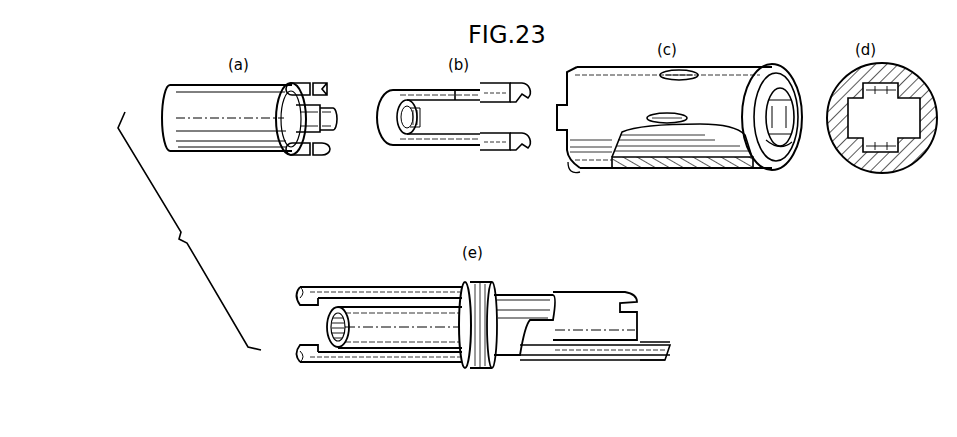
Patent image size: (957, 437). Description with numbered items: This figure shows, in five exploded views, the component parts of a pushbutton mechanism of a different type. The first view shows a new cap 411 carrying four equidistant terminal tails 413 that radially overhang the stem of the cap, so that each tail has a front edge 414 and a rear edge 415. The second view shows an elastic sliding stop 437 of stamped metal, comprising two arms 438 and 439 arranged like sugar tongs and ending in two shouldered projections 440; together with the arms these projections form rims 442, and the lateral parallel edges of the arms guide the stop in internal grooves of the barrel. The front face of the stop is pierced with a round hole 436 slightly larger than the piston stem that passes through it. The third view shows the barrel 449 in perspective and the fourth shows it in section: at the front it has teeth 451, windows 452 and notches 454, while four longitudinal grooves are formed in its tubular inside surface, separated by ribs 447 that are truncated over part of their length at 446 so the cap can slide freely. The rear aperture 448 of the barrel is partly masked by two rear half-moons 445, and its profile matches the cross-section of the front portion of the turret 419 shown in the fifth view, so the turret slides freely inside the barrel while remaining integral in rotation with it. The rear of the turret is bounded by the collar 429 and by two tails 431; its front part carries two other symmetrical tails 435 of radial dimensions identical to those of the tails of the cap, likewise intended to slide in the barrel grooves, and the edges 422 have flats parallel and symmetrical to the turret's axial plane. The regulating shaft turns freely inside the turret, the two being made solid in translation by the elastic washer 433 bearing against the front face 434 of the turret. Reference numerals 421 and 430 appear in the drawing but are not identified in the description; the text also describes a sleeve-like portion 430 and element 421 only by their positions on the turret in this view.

The cap 411 is at (229, 150).
The terminal tails 413 is at (306, 155).
The front edges 414 is at (298, 85).
The rear edges 415 is at (322, 84).
The round hole 436 is at (403, 105).
The elastic sliding stop 437 is at (391, 148).
The arm 438 is at (440, 147).
The arm 439 is at (453, 96).
The projections 440 is at (506, 151).
The rims 442 is at (476, 149).
The rear half-moons 445 is at (784, 148).
The truncated portion of ribs 446 is at (673, 150).
The ribs 447 is at (729, 150).
The rear aperture 448 is at (782, 98).
The barrel 449 is at (848, 78).
The teeth 451 is at (562, 156).
The windows 452 is at (576, 168).
The notches 454 is at (678, 69).
The turret 419 is at (568, 360).
The outer tube 421 is at (437, 353).
The edges 422 is at (392, 350).
The collar 429 is at (492, 365).
The housing block 430 is at (540, 290).
The tails 431 is at (666, 352).
The elastic washer 433 is at (632, 330).
The front face 434 is at (329, 328).
The symmetrical tails 435 is at (297, 296).